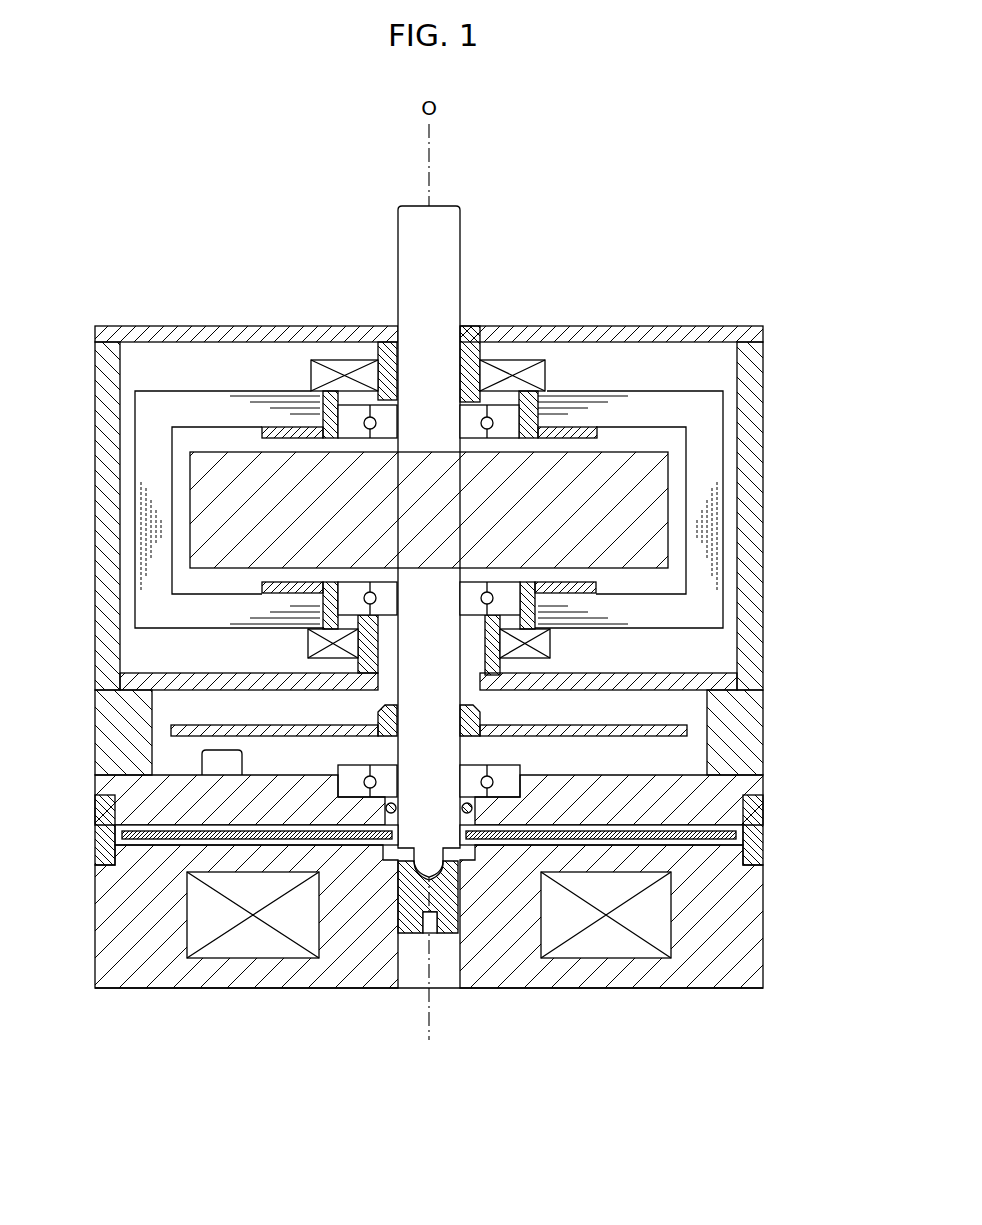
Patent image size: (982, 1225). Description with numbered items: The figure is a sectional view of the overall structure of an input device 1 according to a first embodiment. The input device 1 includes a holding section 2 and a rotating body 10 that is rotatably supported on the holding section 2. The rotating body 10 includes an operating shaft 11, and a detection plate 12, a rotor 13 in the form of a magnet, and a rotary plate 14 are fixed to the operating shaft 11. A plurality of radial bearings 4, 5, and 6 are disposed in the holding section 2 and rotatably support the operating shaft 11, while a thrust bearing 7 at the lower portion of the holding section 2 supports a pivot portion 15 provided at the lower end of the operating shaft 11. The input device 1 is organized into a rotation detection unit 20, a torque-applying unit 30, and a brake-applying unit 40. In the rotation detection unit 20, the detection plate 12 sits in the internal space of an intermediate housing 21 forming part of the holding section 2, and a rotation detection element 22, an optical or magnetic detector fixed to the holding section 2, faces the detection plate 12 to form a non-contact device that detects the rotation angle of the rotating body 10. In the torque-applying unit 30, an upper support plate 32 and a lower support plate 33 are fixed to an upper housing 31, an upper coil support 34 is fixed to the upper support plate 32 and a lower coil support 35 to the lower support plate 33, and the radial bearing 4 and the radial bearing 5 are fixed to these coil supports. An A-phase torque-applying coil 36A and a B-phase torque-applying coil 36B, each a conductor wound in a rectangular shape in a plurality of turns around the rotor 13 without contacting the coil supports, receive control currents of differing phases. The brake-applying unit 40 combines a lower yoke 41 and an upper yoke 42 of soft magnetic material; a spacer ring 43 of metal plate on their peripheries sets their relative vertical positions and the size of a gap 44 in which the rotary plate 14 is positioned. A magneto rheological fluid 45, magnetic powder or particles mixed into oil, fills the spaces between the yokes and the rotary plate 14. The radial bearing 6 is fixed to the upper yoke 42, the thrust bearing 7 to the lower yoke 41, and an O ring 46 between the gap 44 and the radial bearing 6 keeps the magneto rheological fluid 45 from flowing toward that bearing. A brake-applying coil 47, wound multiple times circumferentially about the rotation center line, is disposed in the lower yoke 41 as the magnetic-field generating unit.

The input device 1 is at (716, 220).
The holding section 2 is at (767, 958).
The radial bearing 4 is at (355, 415).
The radial bearing 5 is at (342, 602).
The radial bearing 6 is at (348, 772).
The thrust bearing 7 is at (396, 900).
The rotating body 10 is at (471, 240).
The operating shaft 11 is at (410, 242).
The detection plate 12 is at (746, 792).
The rotor 13 is at (652, 495).
The rotary plate 14 is at (598, 830).
The pivot portion 15 is at (443, 906).
The rotation detection unit 20 is at (73, 690).
The intermediate housing 21 is at (742, 722).
The rotation detection element 22 is at (215, 750).
The torque-applying unit 30 is at (73, 328).
The upper housing 31 is at (752, 384).
The upper support plate 32 is at (598, 326).
The lower support plate 33 is at (645, 680).
The upper coil support 34 is at (470, 350).
The lower coil support 35 is at (532, 616).
The A-phase torque-applying coil 36A is at (322, 372).
The B-phase torque-applying coil 36B is at (680, 400).
The brake-applying unit 40 is at (73, 988).
The lower yoke 41 is at (170, 975).
The upper yoke 42 is at (745, 826).
The spacer ring 43 is at (751, 850).
The gap 44 is at (740, 854).
The magneto rheological fluid 45 is at (150, 864).
The O ring 46 is at (471, 822).
The brake-applying coil 47 is at (243, 946).